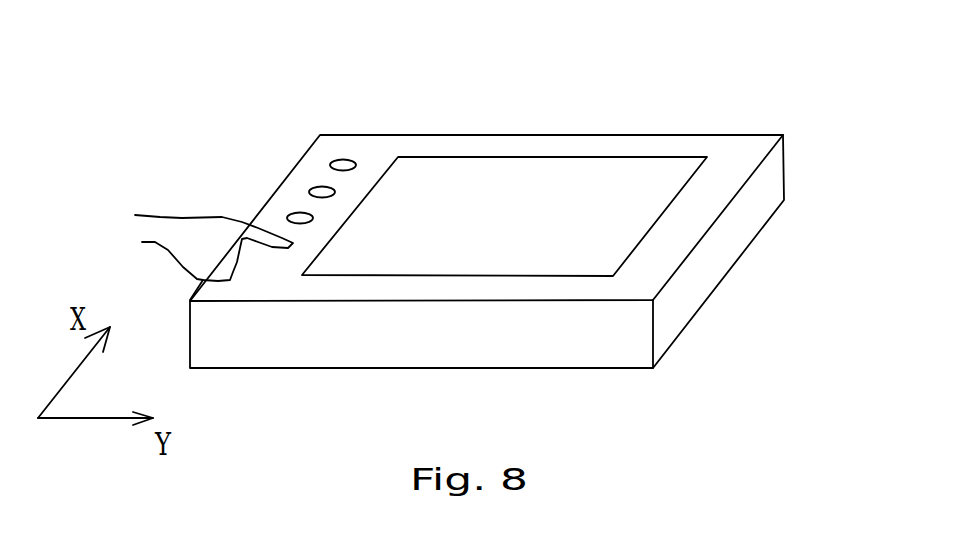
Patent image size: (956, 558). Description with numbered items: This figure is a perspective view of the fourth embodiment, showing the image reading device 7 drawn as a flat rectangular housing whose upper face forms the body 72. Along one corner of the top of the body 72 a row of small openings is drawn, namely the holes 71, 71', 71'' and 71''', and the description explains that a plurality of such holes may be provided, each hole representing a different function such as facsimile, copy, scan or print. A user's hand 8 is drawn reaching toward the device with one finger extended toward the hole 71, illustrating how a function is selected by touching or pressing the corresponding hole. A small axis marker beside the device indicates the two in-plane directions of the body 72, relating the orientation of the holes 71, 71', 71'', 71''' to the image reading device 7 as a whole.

The image reading device 7 is at (487, 243).
The user's hand / finger 8 is at (258, 232).
The hole 71 is at (229, 162).
The hole 71' is at (251, 125).
The hole 71'' is at (300, 101).
The hole 71''' is at (403, 107).
The body 72 is at (257, 283).